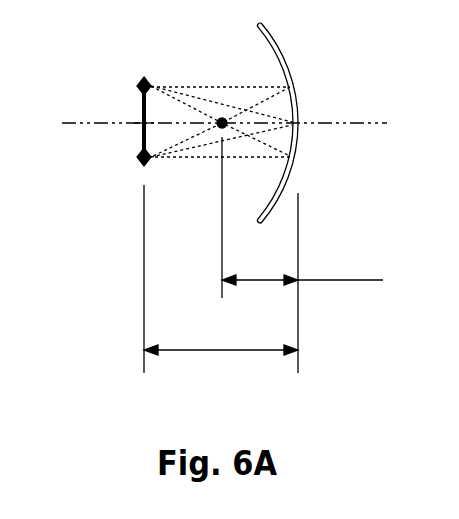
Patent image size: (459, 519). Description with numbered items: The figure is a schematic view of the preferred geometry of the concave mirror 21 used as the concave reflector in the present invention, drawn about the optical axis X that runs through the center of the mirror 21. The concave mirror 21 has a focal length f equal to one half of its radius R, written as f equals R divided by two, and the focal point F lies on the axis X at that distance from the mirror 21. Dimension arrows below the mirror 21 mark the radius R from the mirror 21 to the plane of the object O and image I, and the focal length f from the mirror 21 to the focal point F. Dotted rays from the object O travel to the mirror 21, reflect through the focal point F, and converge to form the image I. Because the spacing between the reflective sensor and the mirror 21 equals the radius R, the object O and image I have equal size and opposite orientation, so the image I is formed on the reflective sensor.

The concave mirror 21 is at (272, 42).
The focal point F is at (221, 194).
The object O is at (132, 96).
The image I is at (137, 150).
The radius of curvature R is at (221, 338).
The focal length f is at (302, 265).
The optical axis X is at (228, 123).